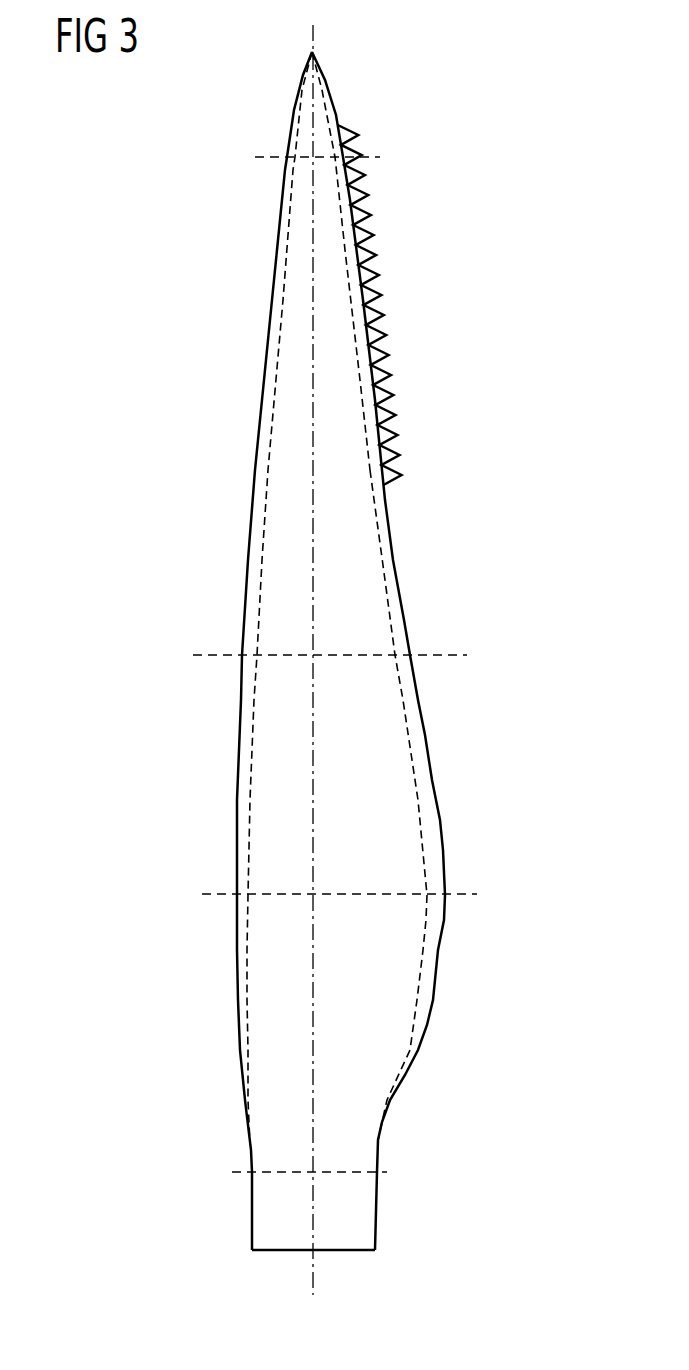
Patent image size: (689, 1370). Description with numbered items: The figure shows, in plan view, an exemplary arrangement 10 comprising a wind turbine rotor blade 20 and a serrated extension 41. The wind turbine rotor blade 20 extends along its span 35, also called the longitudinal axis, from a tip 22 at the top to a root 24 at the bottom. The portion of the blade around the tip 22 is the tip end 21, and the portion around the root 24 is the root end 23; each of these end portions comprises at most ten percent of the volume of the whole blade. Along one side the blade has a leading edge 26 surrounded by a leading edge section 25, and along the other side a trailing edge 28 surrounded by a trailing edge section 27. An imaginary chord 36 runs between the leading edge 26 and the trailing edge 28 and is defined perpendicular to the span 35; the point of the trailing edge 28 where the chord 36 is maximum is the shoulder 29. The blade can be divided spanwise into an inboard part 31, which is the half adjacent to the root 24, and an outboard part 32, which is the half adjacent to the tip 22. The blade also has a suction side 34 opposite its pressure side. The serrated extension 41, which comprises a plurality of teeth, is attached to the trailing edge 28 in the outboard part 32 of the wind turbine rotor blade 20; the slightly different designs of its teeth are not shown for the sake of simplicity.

The arrangement 10 is at (115, 500).
The wind turbine rotor blade 20 is at (268, 985).
The tip end 21 is at (322, 120).
The tip 22 is at (313, 52).
The root end 23 is at (365, 1210).
The root 24 is at (340, 1253).
The leading edge section 25 is at (246, 746).
The leading edge 26 is at (251, 491).
The trailing edge section 27 is at (415, 738).
The trailing edge 28 is at (406, 627).
The shoulder 29 is at (444, 894).
The inboard part 31 is at (497, 791).
The outboard part 32 is at (443, 560).
The suction side 34 is at (360, 1069).
The span 35 is at (312, 1282).
The chord 36 is at (205, 894).
The serrated extension 41 is at (399, 302).